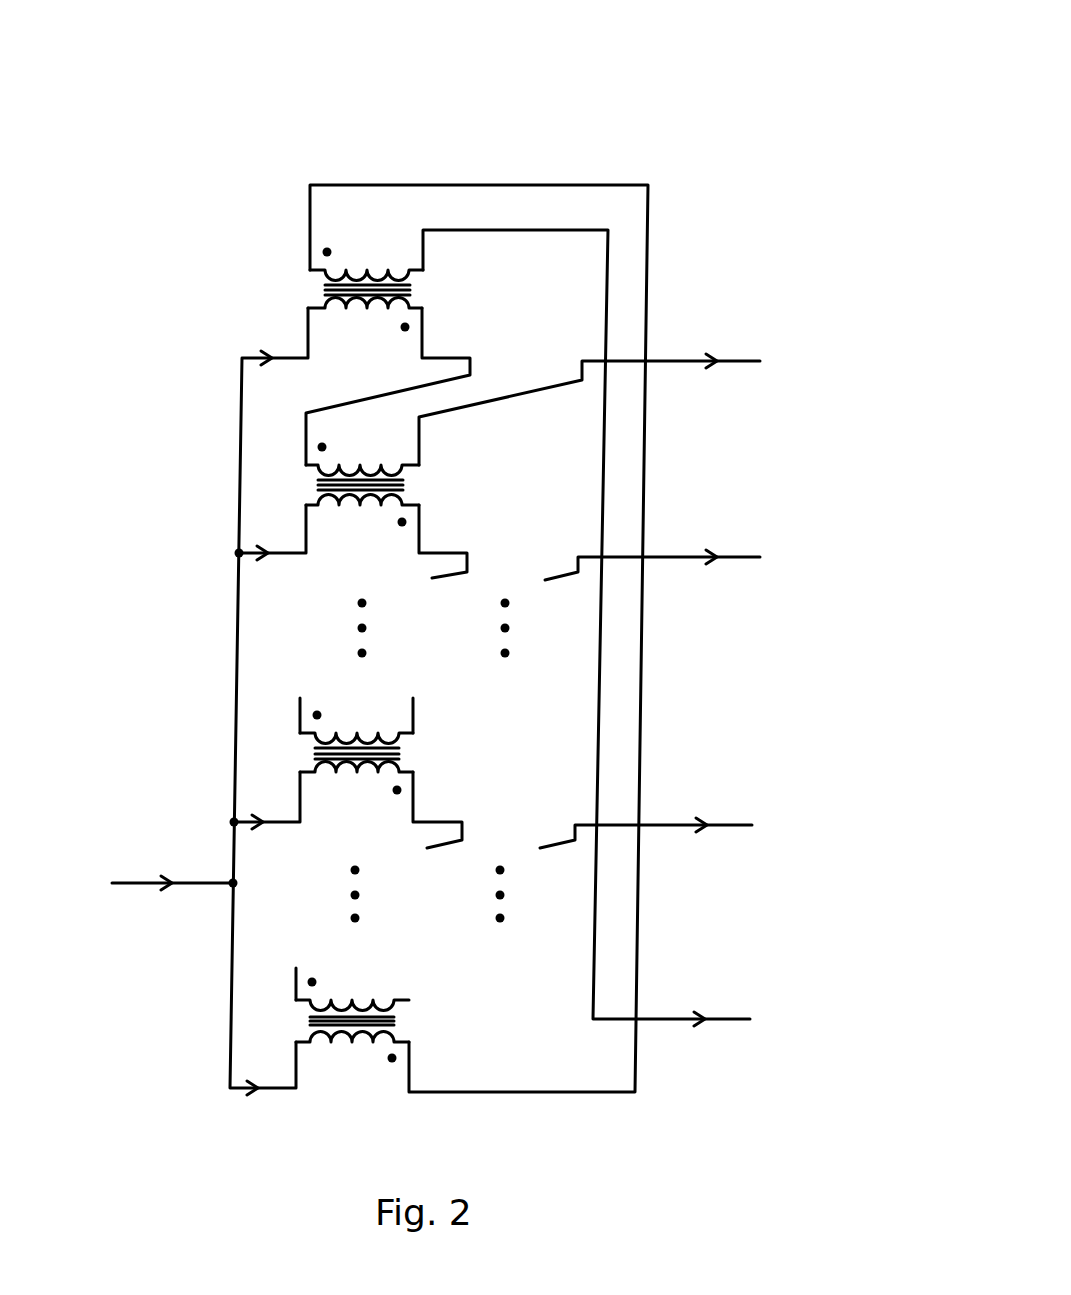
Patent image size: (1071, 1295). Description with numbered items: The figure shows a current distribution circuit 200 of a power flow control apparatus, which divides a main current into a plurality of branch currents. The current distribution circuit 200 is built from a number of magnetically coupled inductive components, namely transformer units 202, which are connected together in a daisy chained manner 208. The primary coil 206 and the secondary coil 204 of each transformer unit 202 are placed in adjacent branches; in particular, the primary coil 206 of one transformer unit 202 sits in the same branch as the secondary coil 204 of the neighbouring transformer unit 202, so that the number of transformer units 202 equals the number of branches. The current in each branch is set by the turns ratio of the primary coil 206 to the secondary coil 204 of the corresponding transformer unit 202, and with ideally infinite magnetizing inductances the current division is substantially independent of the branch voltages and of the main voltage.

The current distribution circuit 200 is at (690, 137).
The transformer unit 202 is at (477, 286).
The secondary coil 204 is at (302, 264).
The primary coil 206 is at (308, 303).
The daisy chained manner 208 is at (370, 154).